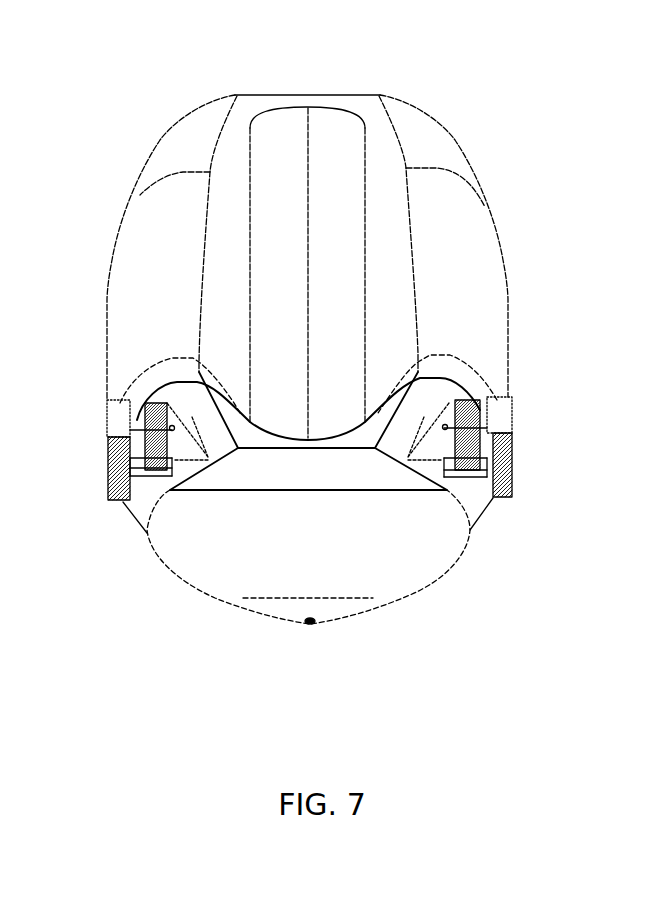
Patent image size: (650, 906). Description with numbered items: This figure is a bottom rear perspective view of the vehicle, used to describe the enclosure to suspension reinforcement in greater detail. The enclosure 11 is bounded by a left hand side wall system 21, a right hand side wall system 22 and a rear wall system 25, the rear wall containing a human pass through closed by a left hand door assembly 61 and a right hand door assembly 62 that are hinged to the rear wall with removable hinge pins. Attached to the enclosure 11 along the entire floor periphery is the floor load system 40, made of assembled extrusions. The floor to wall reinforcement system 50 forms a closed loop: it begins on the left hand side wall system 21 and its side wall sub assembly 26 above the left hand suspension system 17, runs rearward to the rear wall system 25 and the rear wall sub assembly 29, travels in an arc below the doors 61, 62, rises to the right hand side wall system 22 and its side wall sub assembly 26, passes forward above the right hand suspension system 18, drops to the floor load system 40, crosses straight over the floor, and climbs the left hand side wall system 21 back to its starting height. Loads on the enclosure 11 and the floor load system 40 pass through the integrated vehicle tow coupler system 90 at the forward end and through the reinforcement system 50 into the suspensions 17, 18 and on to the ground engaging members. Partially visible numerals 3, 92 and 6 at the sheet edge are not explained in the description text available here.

The enclosure 11 is at (160, 104).
The left hand side wall system 21 is at (98, 262).
The right hand side wall system 22 is at (536, 306).
The rear wall system 25 is at (337, 107).
The side wall sub assembly 26 is at (171, 333).
The rear wall sub assembly 29 is at (245, 246).
The left hand door assembly 61 is at (295, 309).
The right hand door assembly 62 is at (356, 309).
The left hand suspension system 17 is at (237, 448).
The right hand suspension system 18 is at (387, 460).
The floor to wall reinforcement system 50 is at (320, 493).
The floor load system 40 is at (290, 553).
The integrated vehicle tow coupler system 90 is at (313, 622).
The block 3 is at (65, 431).
The hatched block 92 is at (65, 481).
The spring assembly 6 is at (104, 495).